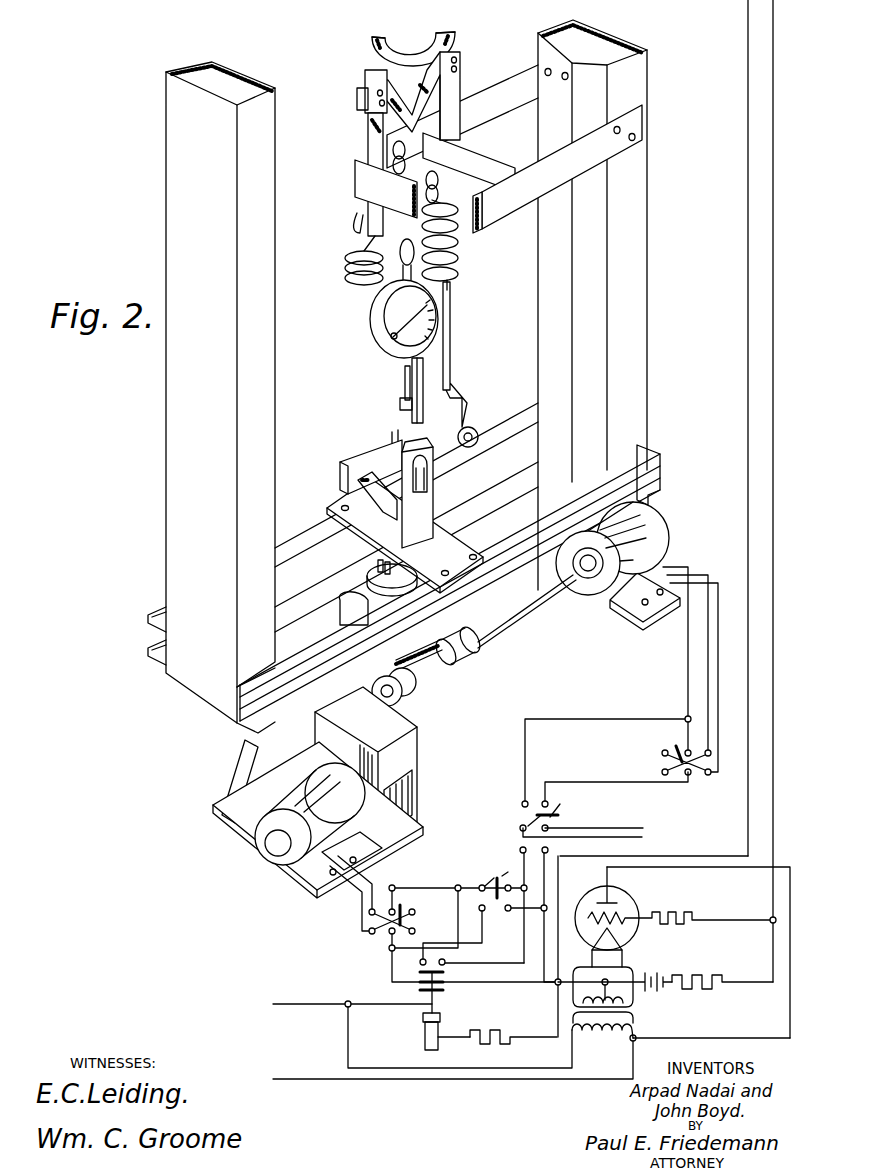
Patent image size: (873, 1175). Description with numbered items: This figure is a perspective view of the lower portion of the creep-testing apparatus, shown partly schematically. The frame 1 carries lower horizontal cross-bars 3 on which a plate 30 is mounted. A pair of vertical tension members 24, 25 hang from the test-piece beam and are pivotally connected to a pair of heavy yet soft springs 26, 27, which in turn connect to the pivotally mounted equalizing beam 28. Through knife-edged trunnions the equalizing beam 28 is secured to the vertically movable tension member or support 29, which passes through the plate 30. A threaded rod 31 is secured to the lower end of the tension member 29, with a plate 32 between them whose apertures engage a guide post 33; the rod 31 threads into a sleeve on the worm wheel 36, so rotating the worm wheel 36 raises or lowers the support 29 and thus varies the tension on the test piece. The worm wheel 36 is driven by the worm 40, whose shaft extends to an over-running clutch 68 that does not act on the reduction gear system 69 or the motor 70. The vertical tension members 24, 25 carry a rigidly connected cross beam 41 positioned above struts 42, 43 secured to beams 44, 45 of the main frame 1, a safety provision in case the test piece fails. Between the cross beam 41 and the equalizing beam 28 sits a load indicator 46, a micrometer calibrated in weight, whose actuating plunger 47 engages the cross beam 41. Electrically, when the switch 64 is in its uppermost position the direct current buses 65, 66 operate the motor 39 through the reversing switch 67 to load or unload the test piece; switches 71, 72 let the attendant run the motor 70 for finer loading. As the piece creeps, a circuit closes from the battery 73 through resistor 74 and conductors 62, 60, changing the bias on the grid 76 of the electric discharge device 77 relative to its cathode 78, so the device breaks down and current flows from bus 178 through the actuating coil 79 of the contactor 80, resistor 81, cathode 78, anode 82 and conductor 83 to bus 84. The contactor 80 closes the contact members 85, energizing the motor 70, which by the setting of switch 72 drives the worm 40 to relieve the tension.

The frame 1 is at (640, 218).
The lower horizontal cross-bars 3 is at (240, 727).
The vertical tension member 24 is at (462, 78).
The vertical tension member 25 is at (366, 125).
The spring 26 is at (462, 262).
The spring 27 is at (346, 252).
The equalizing beam 28 is at (340, 463).
The tension member or support 29 is at (452, 487).
The plate 30 is at (446, 530).
The threaded rod 31 is at (398, 567).
The plate 32 is at (405, 580).
The guide post 33 is at (370, 560).
The worm wheel 36 is at (338, 611).
The motor 39 is at (672, 538).
The worm 40 is at (470, 655).
The cross beam 41 is at (458, 48).
The strut 42 is at (480, 165).
The strut 43 is at (356, 190).
The beam 44 is at (528, 199).
The beam 45 is at (512, 110).
The load indicator 46 is at (372, 323).
The actuating plunger 47 is at (392, 288).
The conductor 60 is at (746, 314).
The conductor 62 is at (774, 430).
The switch 64 is at (556, 814).
The direct current bus 65 is at (602, 826).
The direct current bus 66 is at (636, 840).
The reversing switch 67 is at (683, 752).
The clutch 68 is at (402, 695).
The reduction gear system 69 is at (420, 745).
The motor 70 is at (280, 860).
The switch 71 is at (488, 880).
The switch 72 is at (395, 910).
The battery 73 is at (670, 978).
The resistor 74 is at (724, 980).
The grid 76 is at (624, 918).
The electric discharge device 77 is at (582, 883).
The cathode 78 is at (620, 938).
The actuating coil 79 is at (442, 1012).
The contactor 80 is at (420, 1003).
The resistor 81 is at (512, 1032).
The anode 82 is at (614, 901).
The conductor 83 is at (750, 1028).
The bus 84 is at (435, 1079).
The contact members 85 is at (448, 972).
The bus 178 is at (302, 995).